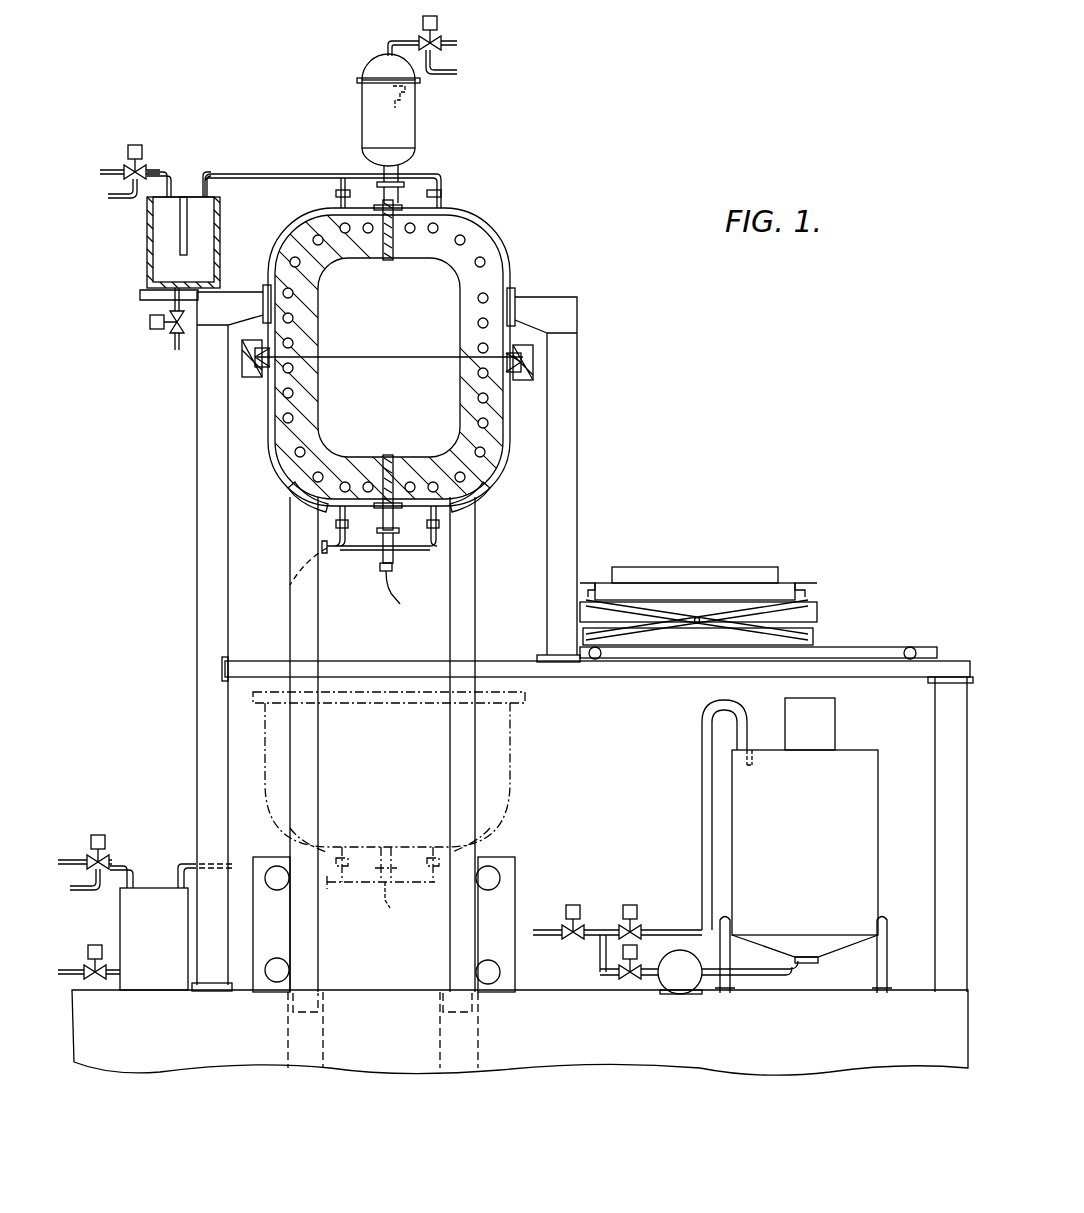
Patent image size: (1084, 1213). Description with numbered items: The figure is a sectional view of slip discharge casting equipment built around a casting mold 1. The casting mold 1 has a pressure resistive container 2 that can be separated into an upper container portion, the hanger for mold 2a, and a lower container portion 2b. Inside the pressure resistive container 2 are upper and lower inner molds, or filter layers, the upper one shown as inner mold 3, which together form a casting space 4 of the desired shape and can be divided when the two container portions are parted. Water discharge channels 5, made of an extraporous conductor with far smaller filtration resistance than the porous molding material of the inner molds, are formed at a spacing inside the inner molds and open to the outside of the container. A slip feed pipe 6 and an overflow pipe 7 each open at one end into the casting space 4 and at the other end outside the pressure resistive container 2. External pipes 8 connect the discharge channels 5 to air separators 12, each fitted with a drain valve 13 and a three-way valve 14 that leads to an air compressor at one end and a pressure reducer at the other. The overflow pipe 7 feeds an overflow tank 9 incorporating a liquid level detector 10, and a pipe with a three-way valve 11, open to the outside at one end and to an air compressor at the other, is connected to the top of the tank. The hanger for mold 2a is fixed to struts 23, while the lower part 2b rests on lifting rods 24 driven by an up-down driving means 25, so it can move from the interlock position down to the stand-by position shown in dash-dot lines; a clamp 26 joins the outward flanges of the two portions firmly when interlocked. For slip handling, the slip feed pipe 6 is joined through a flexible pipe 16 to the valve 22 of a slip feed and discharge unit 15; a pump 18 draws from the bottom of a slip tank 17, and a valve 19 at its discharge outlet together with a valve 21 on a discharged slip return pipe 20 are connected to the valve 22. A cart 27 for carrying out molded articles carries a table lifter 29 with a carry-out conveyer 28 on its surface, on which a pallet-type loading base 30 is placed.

The casting mold 1 is at (497, 238).
The pressure resistive container 2 is at (510, 278).
The hanger for mold 2a is at (483, 243).
The lower container portion 2b is at (493, 475).
The upper inner mold 3 is at (452, 268).
The casting space 4 is at (368, 389).
The water discharge channel 5 is at (478, 312).
The slip feed pipe 6 is at (390, 455).
The overflow pipe 7 is at (387, 250).
The external pipe 8 is at (338, 197).
The overflow tank 9 is at (360, 116).
The liquid level detector 10 is at (410, 115).
The 3-way valve 11 is at (452, 44).
The air separator 12 is at (150, 248).
The drain valve 13 is at (170, 332).
The 3-way valve 14 is at (138, 160).
The slip feed and discharge unit 15 is at (644, 866).
The flexible pipe 16 is at (548, 928).
The slip tank 17 is at (866, 832).
The pump 18 is at (682, 990).
The valve 19 is at (640, 980).
The discharged slip return pipe 20 is at (702, 818).
The valve 21 is at (643, 925).
The valve 22 is at (575, 940).
The struts 23 is at (213, 437).
The lifting rods 24 is at (300, 623).
The up-down driving means 25 is at (275, 925).
The clamp 26 is at (243, 362).
The cart 27 is at (866, 655).
The carry-out conveyer 28 is at (780, 592).
The table lifter 29 is at (830, 614).
The loading base 30 is at (690, 568).